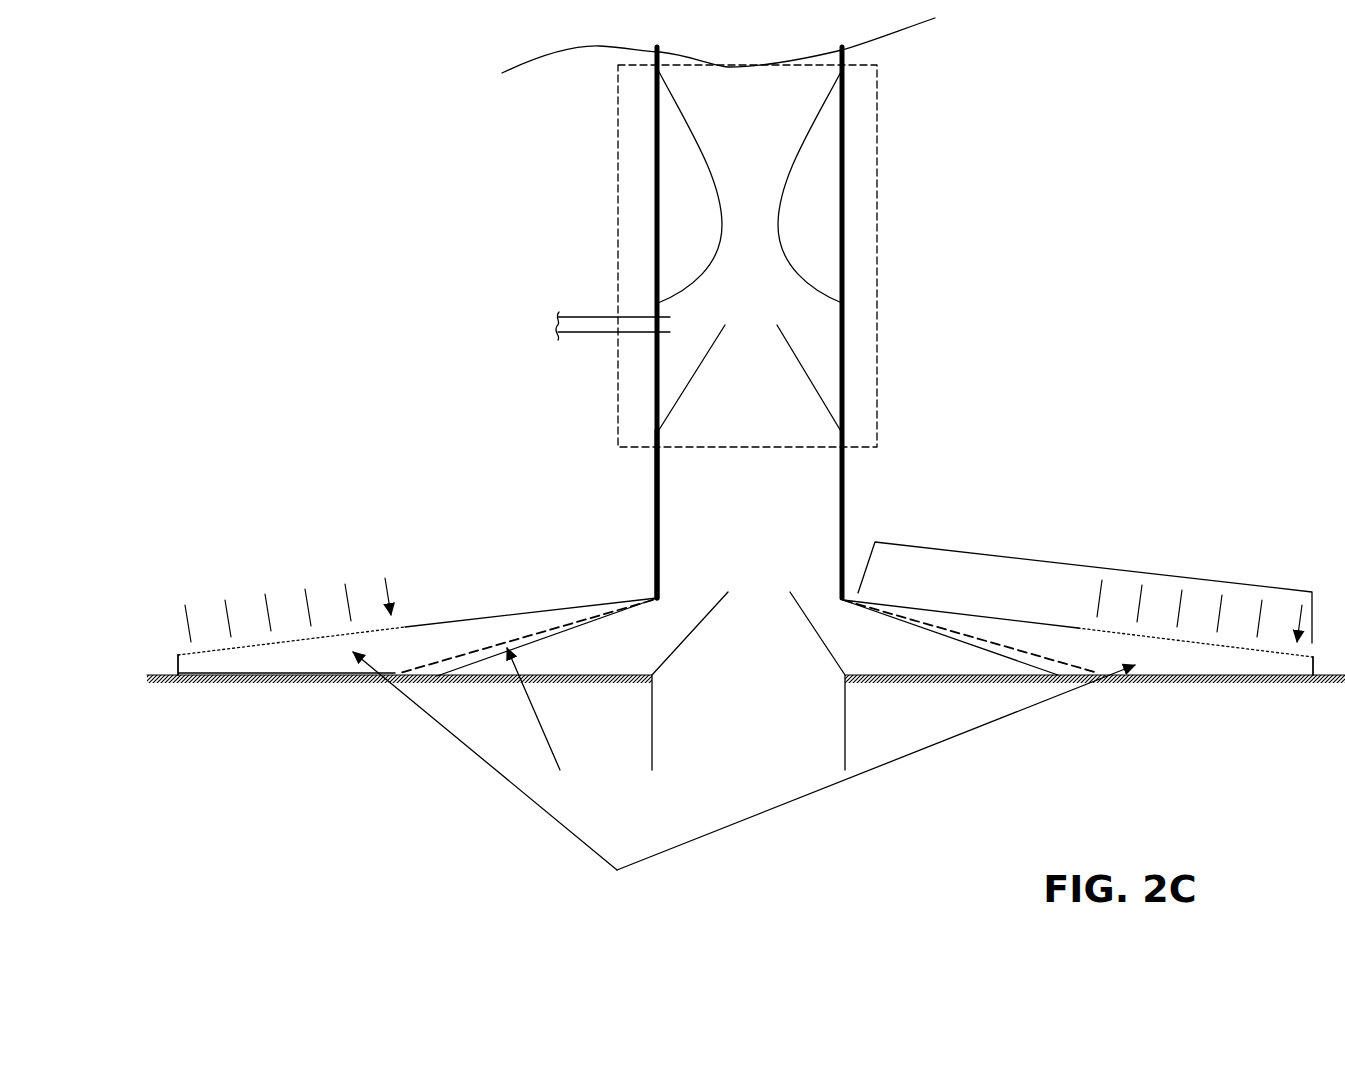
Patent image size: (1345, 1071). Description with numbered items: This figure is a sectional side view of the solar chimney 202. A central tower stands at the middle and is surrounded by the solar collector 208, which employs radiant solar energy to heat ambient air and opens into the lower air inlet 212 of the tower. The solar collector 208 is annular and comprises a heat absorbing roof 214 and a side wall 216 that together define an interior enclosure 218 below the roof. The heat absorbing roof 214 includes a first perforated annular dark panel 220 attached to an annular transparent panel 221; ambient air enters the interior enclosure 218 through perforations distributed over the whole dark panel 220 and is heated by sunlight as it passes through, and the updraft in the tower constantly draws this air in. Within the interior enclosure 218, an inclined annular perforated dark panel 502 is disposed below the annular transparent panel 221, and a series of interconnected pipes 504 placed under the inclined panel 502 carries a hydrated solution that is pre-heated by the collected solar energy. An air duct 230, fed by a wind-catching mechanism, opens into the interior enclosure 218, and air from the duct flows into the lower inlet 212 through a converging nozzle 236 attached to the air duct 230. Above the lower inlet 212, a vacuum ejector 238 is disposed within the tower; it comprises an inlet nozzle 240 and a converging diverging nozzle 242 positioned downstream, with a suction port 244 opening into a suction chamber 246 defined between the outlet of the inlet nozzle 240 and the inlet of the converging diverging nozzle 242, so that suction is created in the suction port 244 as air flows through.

The solar chimney 202 is at (330, 258).
The solar collector 208 is at (390, 545).
The lower air inlet 212 is at (657, 597).
The heat absorbing roof 214 is at (1137, 572).
The side wall 216 is at (175, 660).
The interior enclosure 218 is at (744, 779).
The first perforated annular dark panel 220 is at (1270, 648).
The annular transparent panel 221 is at (990, 613).
The air duct 230 is at (845, 725).
The converging nozzle 236 is at (697, 627).
The vacuum ejector 238 is at (877, 182).
The inlet nozzle 240 is at (808, 373).
The converging diverging nozzle 242 is at (718, 187).
The suction port 244 is at (580, 315).
The suction chamber 246 is at (676, 355).
The inclined annular perforated dark panel 502 is at (500, 635).
The series of interconnected pipes 504 is at (545, 723).